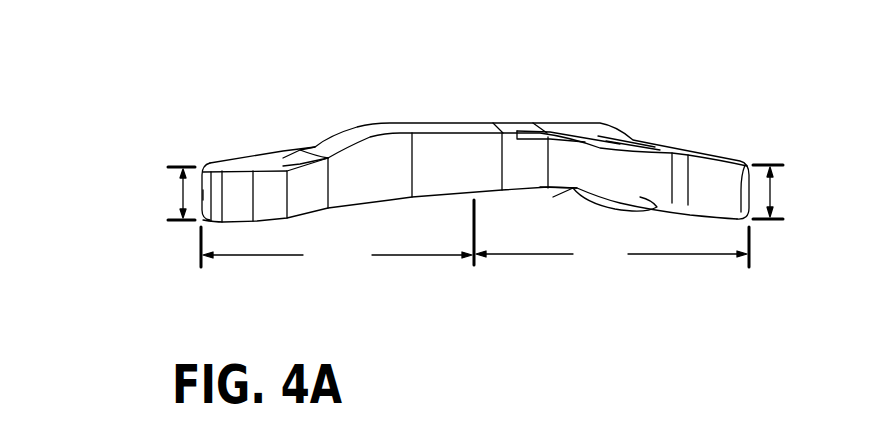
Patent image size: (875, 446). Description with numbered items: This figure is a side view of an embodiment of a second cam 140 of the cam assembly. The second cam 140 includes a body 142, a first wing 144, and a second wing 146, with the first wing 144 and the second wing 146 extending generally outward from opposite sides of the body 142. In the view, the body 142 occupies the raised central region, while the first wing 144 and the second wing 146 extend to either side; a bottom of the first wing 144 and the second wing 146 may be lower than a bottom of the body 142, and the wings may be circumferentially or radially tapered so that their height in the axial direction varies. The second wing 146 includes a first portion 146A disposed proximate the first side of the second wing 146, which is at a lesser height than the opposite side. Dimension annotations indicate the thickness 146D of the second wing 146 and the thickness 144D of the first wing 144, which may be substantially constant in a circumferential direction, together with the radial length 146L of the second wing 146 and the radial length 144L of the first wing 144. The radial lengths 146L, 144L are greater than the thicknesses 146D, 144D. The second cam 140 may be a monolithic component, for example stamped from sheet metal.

The second cam 140 is at (358, 95).
The body 142 is at (459, 115).
The first wing 144 is at (708, 140).
The second wing 146 is at (244, 142).
The thickness of the second wing 146D is at (181, 188).
The thickness of the first wing 144D is at (772, 193).
The radial length of the second wing 146L is at (337, 235).
The radial length of the first wing 144L is at (612, 248).
The first portion of the second wing 146A is at (874, 341).